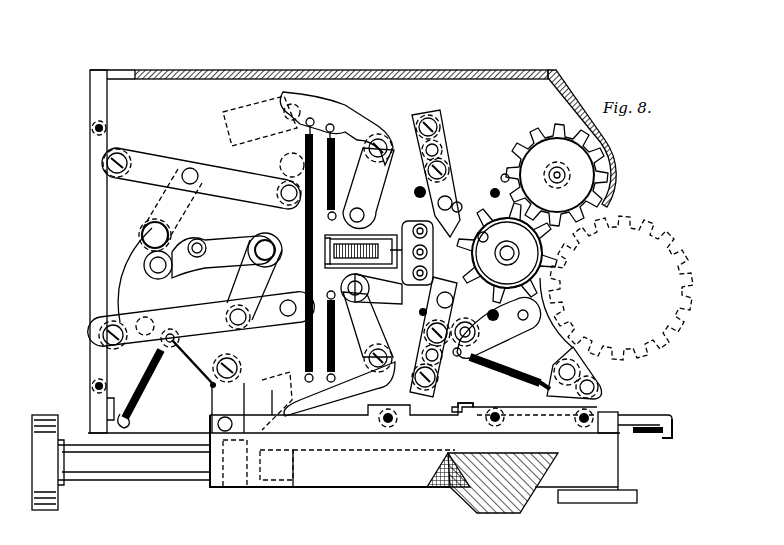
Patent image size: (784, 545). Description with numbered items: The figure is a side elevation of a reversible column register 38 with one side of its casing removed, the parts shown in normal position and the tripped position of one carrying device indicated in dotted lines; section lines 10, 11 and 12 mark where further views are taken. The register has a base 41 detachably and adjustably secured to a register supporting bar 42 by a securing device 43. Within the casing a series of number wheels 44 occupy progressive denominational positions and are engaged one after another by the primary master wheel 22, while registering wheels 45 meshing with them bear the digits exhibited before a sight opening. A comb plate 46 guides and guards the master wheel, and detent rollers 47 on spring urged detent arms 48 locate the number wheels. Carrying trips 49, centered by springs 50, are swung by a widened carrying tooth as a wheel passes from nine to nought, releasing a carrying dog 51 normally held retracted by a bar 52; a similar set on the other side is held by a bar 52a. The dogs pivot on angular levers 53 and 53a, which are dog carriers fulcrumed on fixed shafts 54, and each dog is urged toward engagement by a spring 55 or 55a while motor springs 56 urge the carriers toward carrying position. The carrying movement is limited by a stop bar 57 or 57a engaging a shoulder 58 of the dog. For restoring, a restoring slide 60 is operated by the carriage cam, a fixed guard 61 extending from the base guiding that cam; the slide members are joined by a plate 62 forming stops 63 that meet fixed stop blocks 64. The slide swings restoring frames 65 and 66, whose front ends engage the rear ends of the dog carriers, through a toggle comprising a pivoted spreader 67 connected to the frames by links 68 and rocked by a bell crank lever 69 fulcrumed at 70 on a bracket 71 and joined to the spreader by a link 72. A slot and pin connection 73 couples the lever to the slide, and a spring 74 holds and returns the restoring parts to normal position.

The section line 10- 10 is at (118, 392).
The section line 11- 11 is at (404, 520).
The section line 12- 12 is at (278, 520).
The primary master wheel 22 is at (690, 266).
The column register 38 is at (90, 190).
The base 41 is at (348, 478).
The register supporting bar 42 is at (482, 510).
The securing device 43 is at (196, 487).
The number wheels 44 is at (545, 286).
The registering wheels 45 is at (610, 170).
The comb plate 46 is at (575, 356).
The detent rollers 47 is at (528, 333).
The detent arms 48 is at (478, 345).
The carrying trips 49 is at (500, 256).
The springs 50 is at (318, 262).
The carrying dog 51 is at (385, 303).
The bar 52 is at (492, 314).
The bar 52a is at (458, 205).
The angular lever 53 is at (375, 330).
The angular lever 53a is at (415, 190).
The fixed shafts 54 is at (372, 132).
The spring 55 is at (348, 326).
The spring 55a is at (303, 157).
The motor springs 56 is at (305, 222).
The stop bar 57 is at (517, 340).
The stop bar 57a is at (505, 172).
The shoulder 58 is at (467, 269).
The restoring slide 60 is at (648, 436).
The fixed guard 61 is at (677, 428).
The plate 62 is at (556, 394).
The stops 63 is at (452, 410).
The fixed stop blocks 64 is at (505, 384).
The restoring frame 65 is at (162, 160).
The restoring frame 66 is at (198, 305).
The spreader 67 is at (228, 242).
The links 68 is at (160, 198).
The bell crank lever 69 is at (186, 348).
The fulcrum 70 is at (237, 362).
The bracket 71 is at (244, 385).
The link 72 is at (128, 292).
The slot and pin connection 73 is at (217, 425).
The spring 74 is at (150, 382).